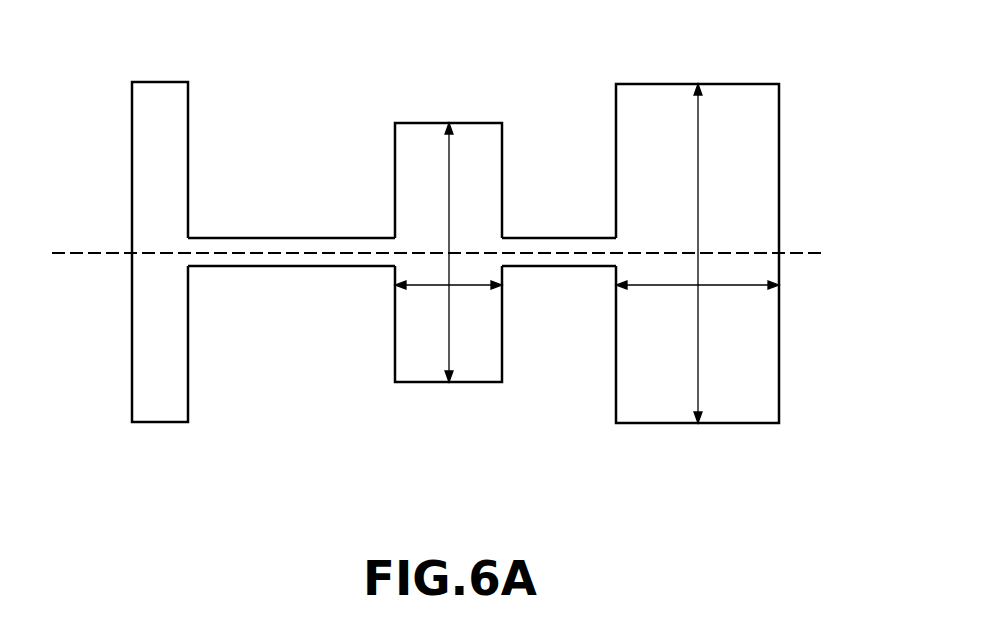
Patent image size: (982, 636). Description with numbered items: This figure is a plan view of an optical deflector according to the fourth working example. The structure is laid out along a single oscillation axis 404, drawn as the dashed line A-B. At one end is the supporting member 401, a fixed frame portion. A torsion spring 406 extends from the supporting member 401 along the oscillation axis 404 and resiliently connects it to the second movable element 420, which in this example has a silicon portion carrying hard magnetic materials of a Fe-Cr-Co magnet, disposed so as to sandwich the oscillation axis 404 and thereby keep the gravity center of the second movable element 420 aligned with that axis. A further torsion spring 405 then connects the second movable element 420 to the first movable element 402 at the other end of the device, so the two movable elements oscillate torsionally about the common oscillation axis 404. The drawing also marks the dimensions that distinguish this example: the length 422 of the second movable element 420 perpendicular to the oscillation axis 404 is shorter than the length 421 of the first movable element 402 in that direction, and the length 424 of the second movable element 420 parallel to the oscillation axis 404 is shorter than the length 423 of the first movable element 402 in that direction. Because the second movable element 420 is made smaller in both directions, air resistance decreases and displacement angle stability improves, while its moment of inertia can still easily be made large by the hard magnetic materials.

The supporting member 401 is at (140, 140).
The first movable element 402 is at (758, 100).
The oscillation axis 404 is at (800, 252).
The torsion spring 405 is at (567, 257).
The torsion spring 406 is at (238, 264).
The second movable element 420 is at (428, 132).
The length of first movable element perpendicular to oscillation axis 421 is at (697, 149).
The length of second movable element perpendicular to oscillation axis 422 is at (485, 150).
The length of first movable element parallel to oscillation axis 423 is at (723, 288).
The length of second movable element parallel to oscillation axis 424 is at (423, 287).